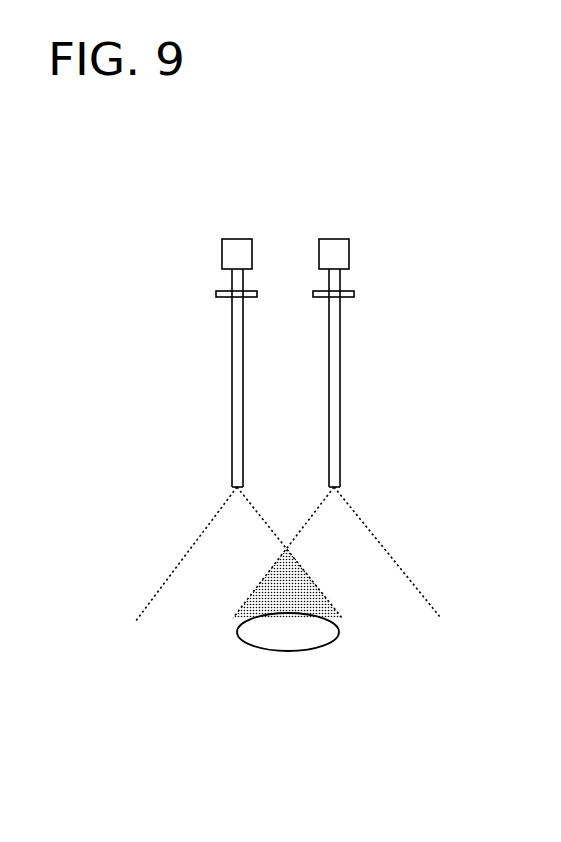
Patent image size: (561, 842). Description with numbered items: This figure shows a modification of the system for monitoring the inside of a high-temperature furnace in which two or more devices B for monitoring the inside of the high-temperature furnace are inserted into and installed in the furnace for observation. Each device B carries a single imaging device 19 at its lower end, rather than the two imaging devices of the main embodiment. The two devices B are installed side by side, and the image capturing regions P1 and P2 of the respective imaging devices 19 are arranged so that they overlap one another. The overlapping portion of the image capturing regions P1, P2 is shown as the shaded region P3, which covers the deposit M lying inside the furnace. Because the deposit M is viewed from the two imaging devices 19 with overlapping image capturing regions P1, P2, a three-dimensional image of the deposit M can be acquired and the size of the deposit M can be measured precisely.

The device for monitoring the inside of the high-temperature furnace B is at (217, 293).
The imaging device 19 is at (232, 476).
The image capturing region P1 is at (368, 528).
The image capturing region P2 is at (203, 531).
The overlapping blast region P3 is at (312, 590).
The deposit M is at (285, 652).